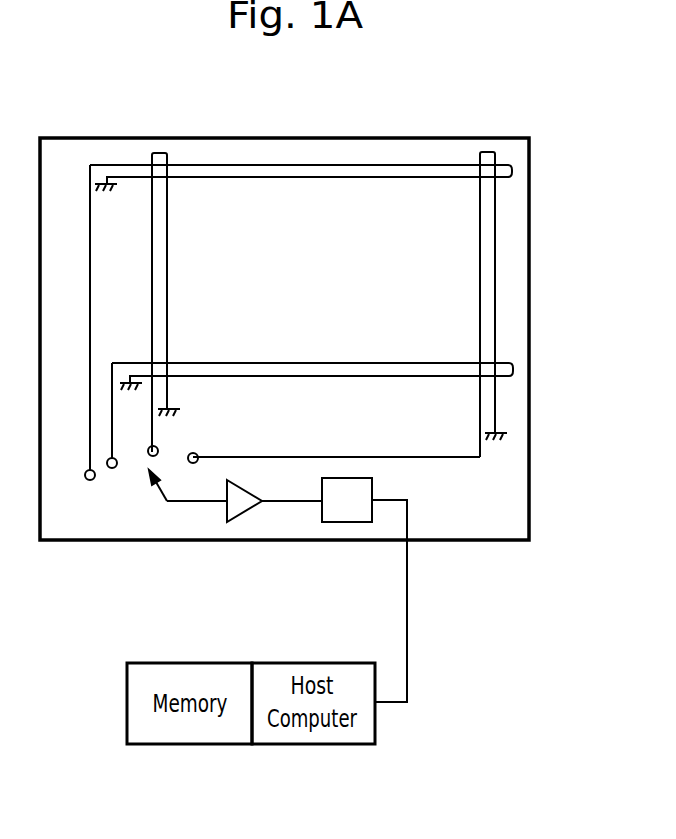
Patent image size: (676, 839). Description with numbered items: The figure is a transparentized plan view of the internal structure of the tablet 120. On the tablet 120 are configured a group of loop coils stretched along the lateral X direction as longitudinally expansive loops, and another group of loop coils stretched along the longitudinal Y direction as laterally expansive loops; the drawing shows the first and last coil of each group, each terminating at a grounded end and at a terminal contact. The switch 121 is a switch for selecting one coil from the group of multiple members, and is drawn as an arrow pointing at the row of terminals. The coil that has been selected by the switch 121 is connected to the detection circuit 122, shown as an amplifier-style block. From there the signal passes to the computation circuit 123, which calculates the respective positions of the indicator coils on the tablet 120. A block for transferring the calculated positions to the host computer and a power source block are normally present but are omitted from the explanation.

The tablet 120 is at (480, 541).
The switch 121 is at (165, 503).
The detection circuit 122 is at (250, 513).
The computation circuit 123 is at (343, 522).